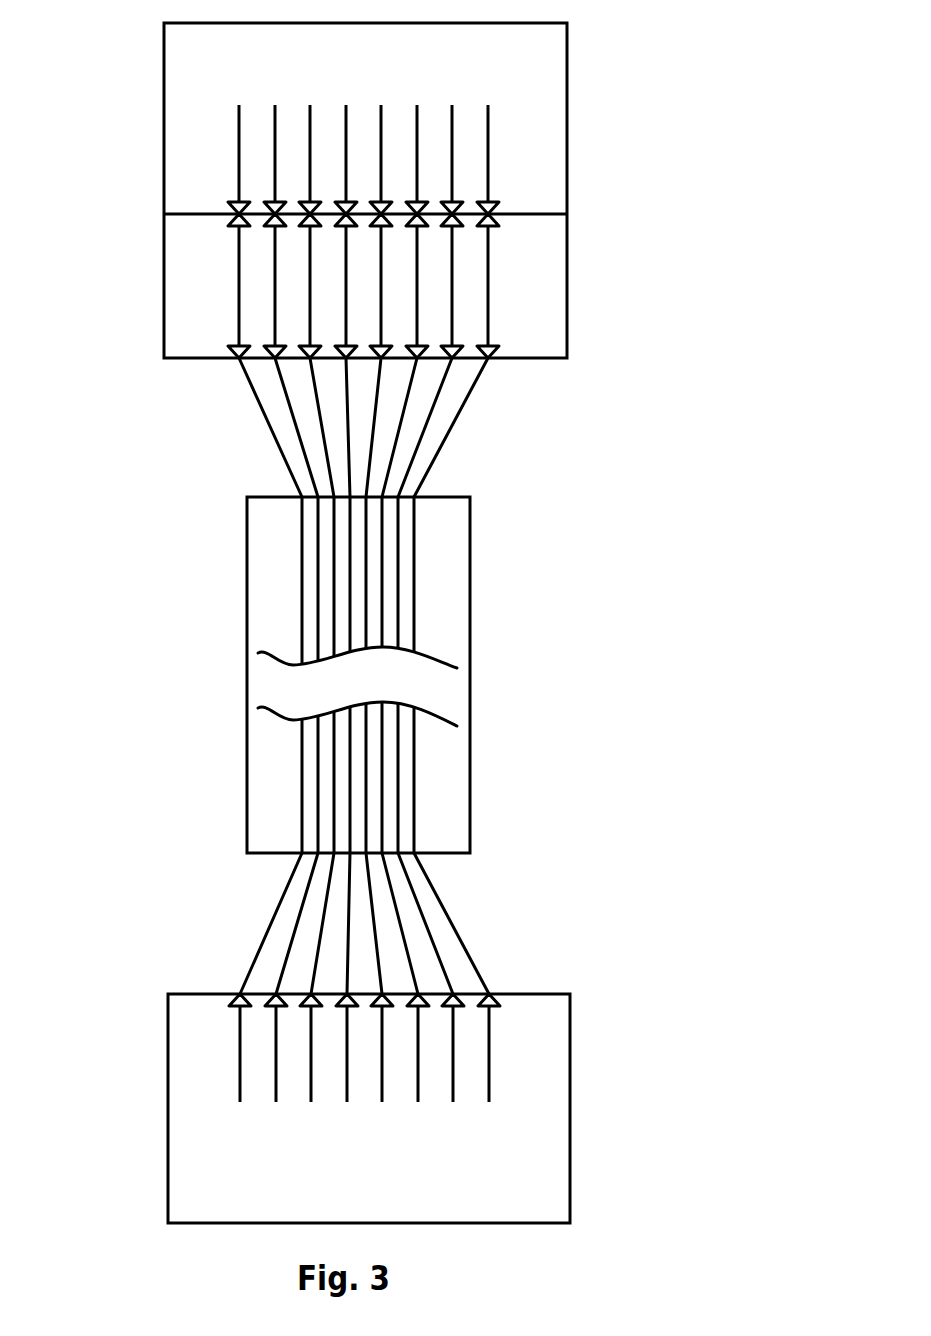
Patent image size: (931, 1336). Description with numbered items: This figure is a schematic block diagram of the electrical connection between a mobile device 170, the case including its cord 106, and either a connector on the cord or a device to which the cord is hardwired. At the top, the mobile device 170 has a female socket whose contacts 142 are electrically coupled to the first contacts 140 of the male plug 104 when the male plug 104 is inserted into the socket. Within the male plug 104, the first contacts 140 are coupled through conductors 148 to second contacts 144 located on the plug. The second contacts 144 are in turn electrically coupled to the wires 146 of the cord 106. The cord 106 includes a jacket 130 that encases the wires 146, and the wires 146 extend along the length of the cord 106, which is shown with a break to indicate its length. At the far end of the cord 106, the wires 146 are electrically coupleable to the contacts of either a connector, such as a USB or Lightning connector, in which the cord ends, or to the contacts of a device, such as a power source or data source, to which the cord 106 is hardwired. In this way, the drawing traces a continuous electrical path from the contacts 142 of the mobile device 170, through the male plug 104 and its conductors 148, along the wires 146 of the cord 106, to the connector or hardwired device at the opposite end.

The male plug 104 is at (568, 330).
The mobile device 170 is at (568, 142).
The contacts 142 is at (498, 200).
The first contacts 140 is at (498, 222).
The conductors 148 is at (490, 310).
The second contacts 144 is at (498, 353).
The cord 106 is at (470, 565).
The wires 146 is at (415, 615).
The jacket 130 is at (247, 593).